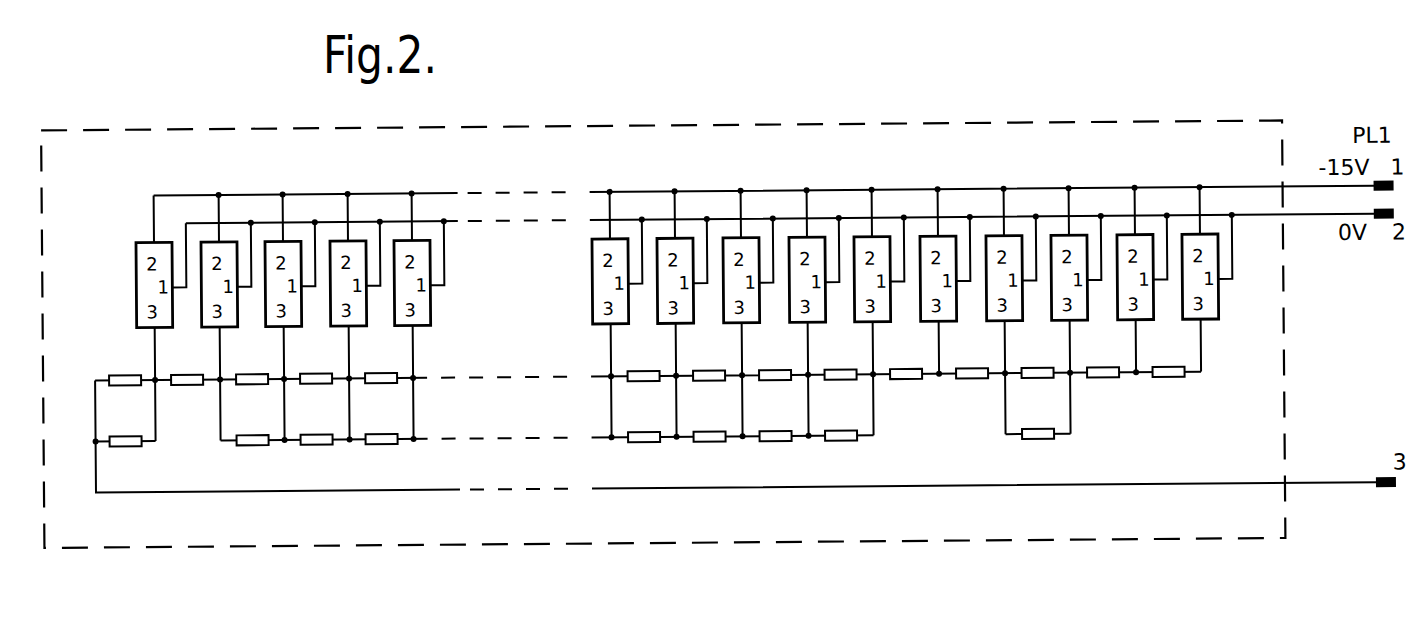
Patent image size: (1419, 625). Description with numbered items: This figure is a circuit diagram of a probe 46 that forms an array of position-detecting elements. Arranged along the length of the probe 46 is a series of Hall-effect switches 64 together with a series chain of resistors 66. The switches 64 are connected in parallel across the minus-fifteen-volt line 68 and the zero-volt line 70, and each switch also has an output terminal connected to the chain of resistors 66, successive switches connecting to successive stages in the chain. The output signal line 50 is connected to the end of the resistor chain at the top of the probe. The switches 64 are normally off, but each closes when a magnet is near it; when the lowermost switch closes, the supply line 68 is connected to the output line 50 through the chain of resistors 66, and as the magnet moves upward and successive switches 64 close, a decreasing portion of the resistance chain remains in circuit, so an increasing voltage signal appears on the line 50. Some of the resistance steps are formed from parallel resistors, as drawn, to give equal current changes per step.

The probe 46 is at (725, 132).
The output signal line 50 is at (1345, 492).
The Hall-effect switches 64 is at (1087, 246).
The resistors 66 is at (847, 449).
The -15 V line 68 is at (1306, 196).
The 0 V line 70 is at (1315, 224).